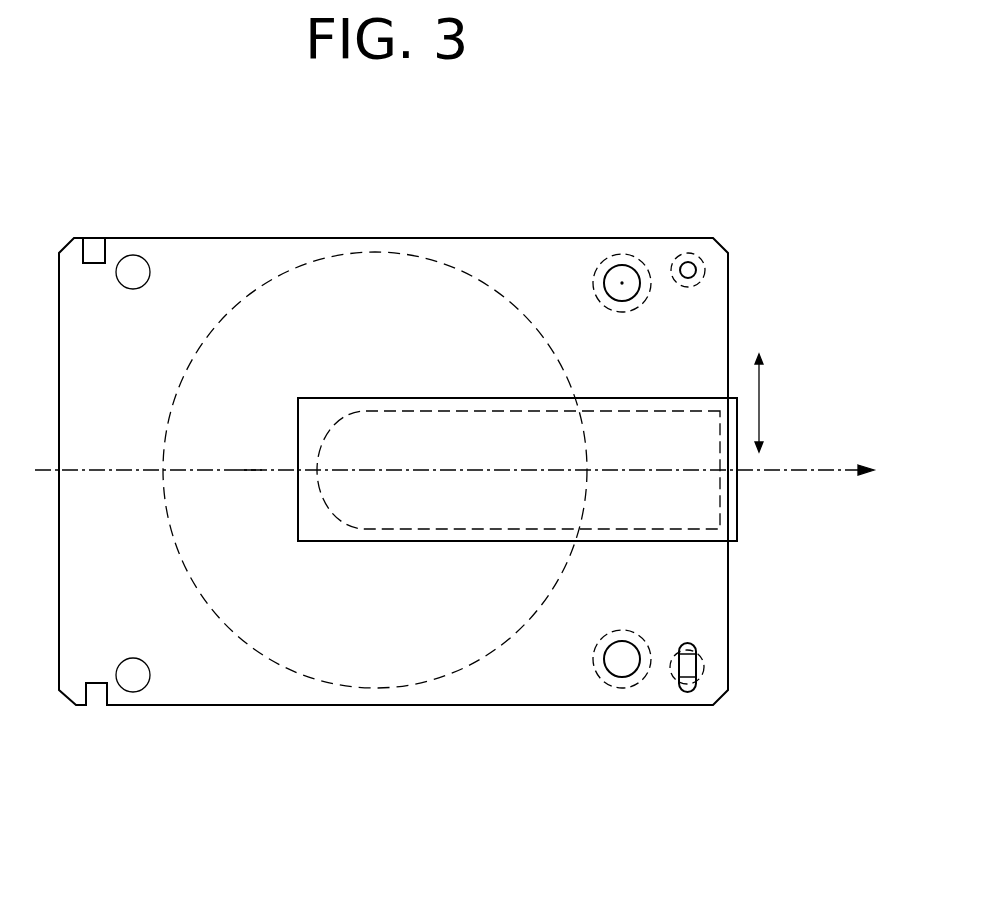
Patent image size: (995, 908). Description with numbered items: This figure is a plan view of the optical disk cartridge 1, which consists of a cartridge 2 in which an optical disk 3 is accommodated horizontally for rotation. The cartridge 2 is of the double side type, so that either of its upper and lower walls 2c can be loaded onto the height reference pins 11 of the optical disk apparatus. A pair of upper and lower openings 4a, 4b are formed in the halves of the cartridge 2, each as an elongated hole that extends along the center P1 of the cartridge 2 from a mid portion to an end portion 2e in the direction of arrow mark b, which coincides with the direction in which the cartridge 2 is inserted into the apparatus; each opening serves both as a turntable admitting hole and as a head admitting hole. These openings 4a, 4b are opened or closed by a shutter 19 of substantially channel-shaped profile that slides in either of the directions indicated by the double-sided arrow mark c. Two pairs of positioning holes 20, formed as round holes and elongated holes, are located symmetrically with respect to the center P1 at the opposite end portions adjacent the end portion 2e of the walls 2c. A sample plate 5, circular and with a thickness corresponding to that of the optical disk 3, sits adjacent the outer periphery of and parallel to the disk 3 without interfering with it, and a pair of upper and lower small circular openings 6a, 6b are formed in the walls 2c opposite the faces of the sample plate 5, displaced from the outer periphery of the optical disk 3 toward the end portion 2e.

The optical disk cartridge 1 is at (447, 207).
The cartridge 2 is at (205, 250).
The upper and lower walls 2c is at (222, 680).
The end portion 2e is at (728, 576).
The optical disk 3 is at (445, 677).
The upper opening 4a is at (517, 436).
The lower opening 4b is at (350, 420).
The sample plate 5 is at (595, 270).
The upper small circular opening 6a is at (651, 467).
The lower small circular opening 6b is at (621, 268).
The height reference pins 11 is at (135, 256).
The shutter 19 is at (768, 469).
The positioning holes 20 is at (690, 262).
The center P1 is at (250, 470).
The arrow mark b is at (820, 470).
The double-sided arrow mark c is at (762, 402).